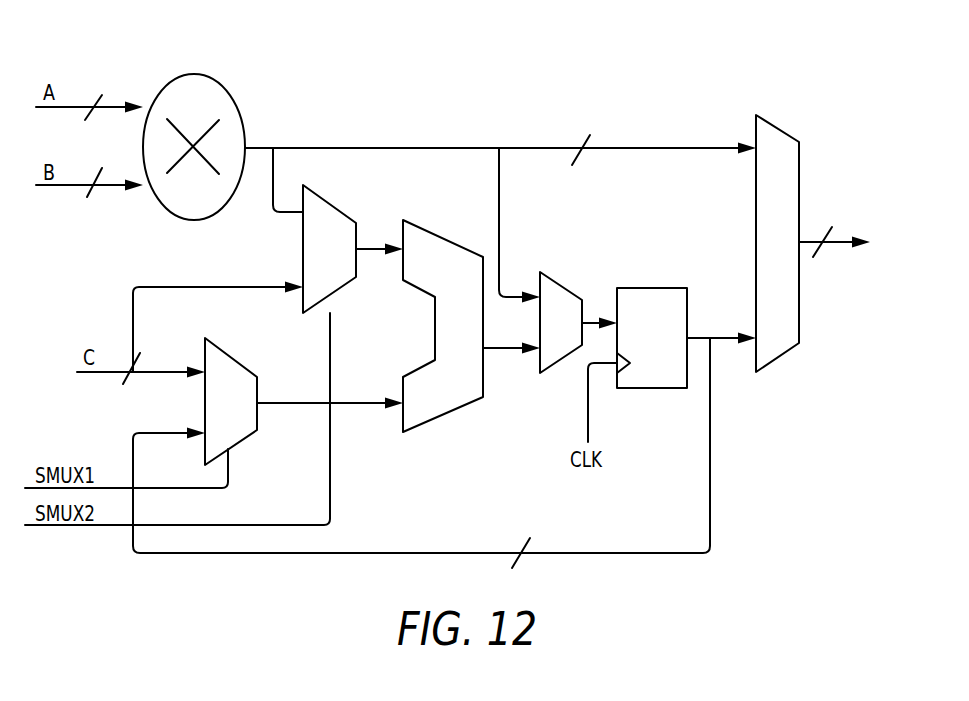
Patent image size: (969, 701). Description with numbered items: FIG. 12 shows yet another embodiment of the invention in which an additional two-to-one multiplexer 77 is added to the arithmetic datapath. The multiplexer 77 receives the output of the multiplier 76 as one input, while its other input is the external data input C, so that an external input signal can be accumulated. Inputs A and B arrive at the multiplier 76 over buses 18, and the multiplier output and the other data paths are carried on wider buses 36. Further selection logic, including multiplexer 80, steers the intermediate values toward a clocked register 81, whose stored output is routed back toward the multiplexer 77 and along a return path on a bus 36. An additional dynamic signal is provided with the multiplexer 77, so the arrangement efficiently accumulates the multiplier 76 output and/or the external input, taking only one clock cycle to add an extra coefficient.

The 18-bit input bus 18 is at (100, 93).
The multiplier 76 is at (218, 80).
The 36-bit bus 36 is at (582, 135).
The multiplexer 80 is at (561, 286).
The register 81 is at (670, 393).
The 2:1 multiplexer 77 is at (777, 125).